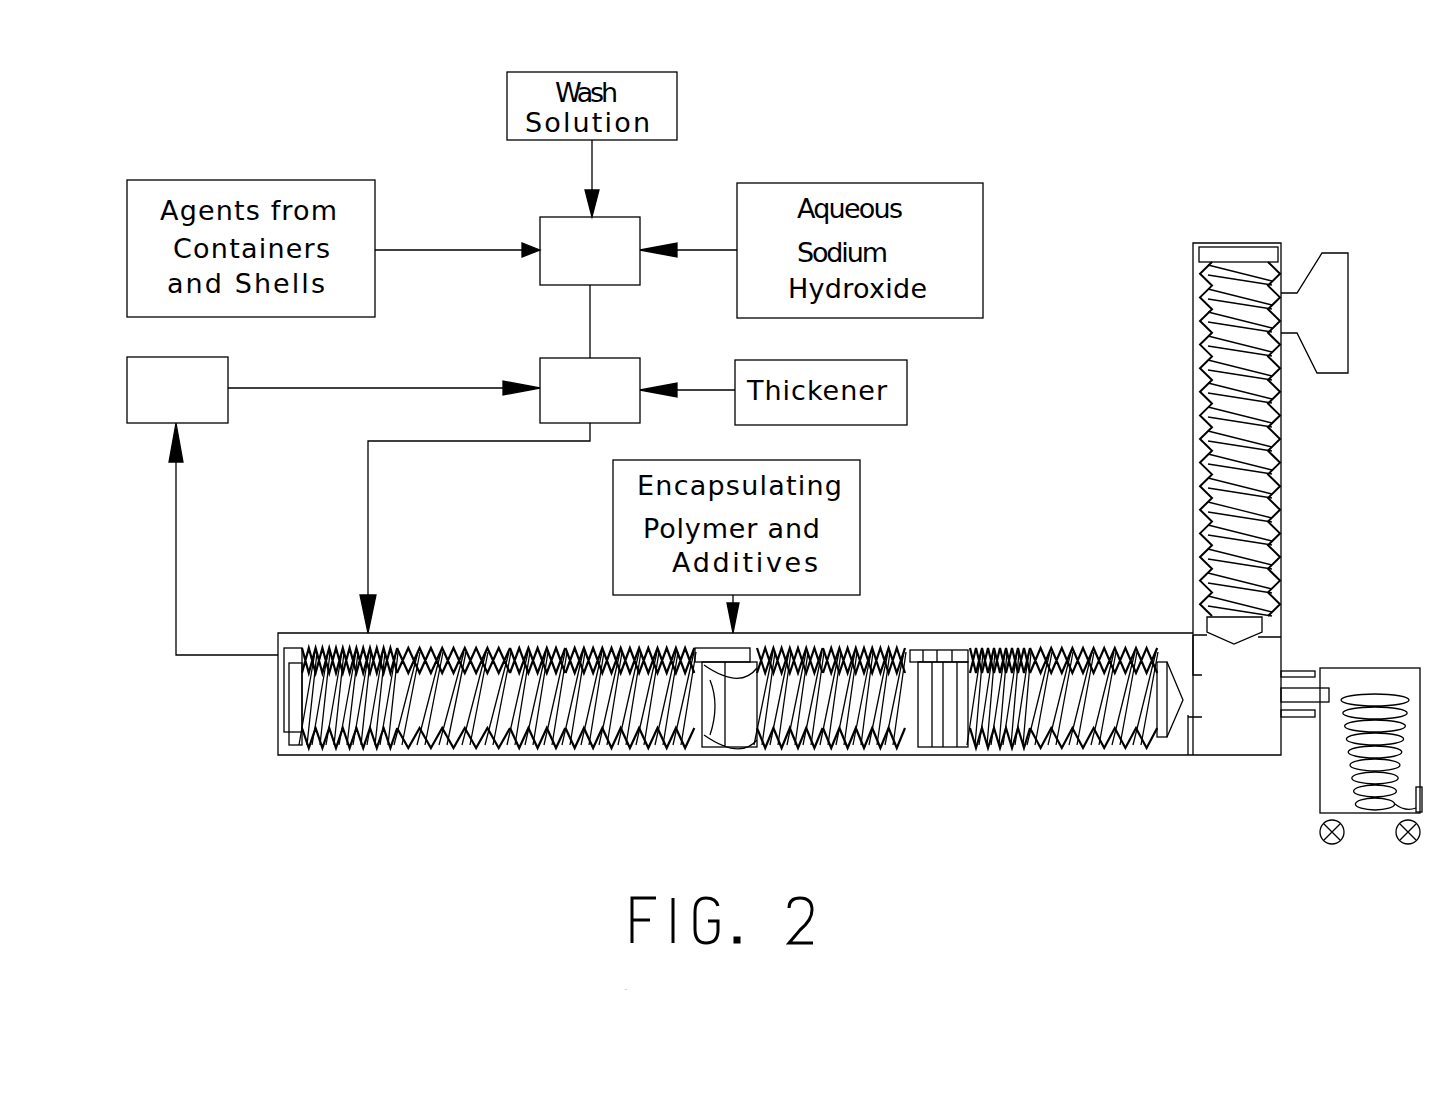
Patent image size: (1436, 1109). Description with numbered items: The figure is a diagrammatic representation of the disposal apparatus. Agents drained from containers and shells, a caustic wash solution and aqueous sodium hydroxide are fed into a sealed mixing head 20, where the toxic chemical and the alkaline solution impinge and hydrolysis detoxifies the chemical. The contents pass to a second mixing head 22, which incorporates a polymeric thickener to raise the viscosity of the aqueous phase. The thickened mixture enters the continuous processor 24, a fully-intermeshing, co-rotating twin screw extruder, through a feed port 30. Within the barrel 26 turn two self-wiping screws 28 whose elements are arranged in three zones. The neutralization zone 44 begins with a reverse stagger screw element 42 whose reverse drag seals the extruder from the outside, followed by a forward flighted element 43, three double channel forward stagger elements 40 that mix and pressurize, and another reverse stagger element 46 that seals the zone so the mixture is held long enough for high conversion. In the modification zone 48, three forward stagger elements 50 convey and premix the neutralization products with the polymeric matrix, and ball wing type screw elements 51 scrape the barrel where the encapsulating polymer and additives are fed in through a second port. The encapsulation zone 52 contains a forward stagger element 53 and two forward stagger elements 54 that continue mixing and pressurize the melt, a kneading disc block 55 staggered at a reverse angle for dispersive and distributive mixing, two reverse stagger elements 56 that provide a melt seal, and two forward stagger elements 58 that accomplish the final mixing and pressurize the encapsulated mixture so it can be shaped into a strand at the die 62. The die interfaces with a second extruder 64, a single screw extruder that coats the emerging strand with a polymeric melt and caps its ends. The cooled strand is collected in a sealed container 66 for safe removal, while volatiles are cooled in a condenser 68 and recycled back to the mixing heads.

The mixing head 20 is at (578, 267).
The second mixing head 22 is at (578, 405).
The continuous processor 24 is at (690, 706).
The extruder barrel 26 is at (907, 641).
The screws 28 is at (1050, 642).
The feed port 30 is at (368, 565).
The forward stagger elements 40 is at (465, 760).
The reverse stagger screw element 42 is at (318, 757).
The forward flighted element 43 is at (365, 757).
The neutralization zone 44 is at (420, 743).
The reverse stagger element 46 is at (531, 757).
The modification zone 48 is at (593, 744).
The forward stagger elements 50 is at (580, 752).
The ball wing type screw elements 51 is at (716, 752).
The encapsulation zone 52 is at (1037, 706).
The forward stagger element 53 is at (770, 752).
The forward stagger elements 54 is at (870, 757).
The kneading disc block 55 is at (948, 757).
The reverse stagger elements 56 is at (1010, 655).
The forward stagger elements 58 is at (1090, 752).
The die 62 is at (1222, 701).
The second extruder 64 is at (1265, 517).
The sealed container 66 is at (1377, 668).
The condenser 68 is at (162, 403).